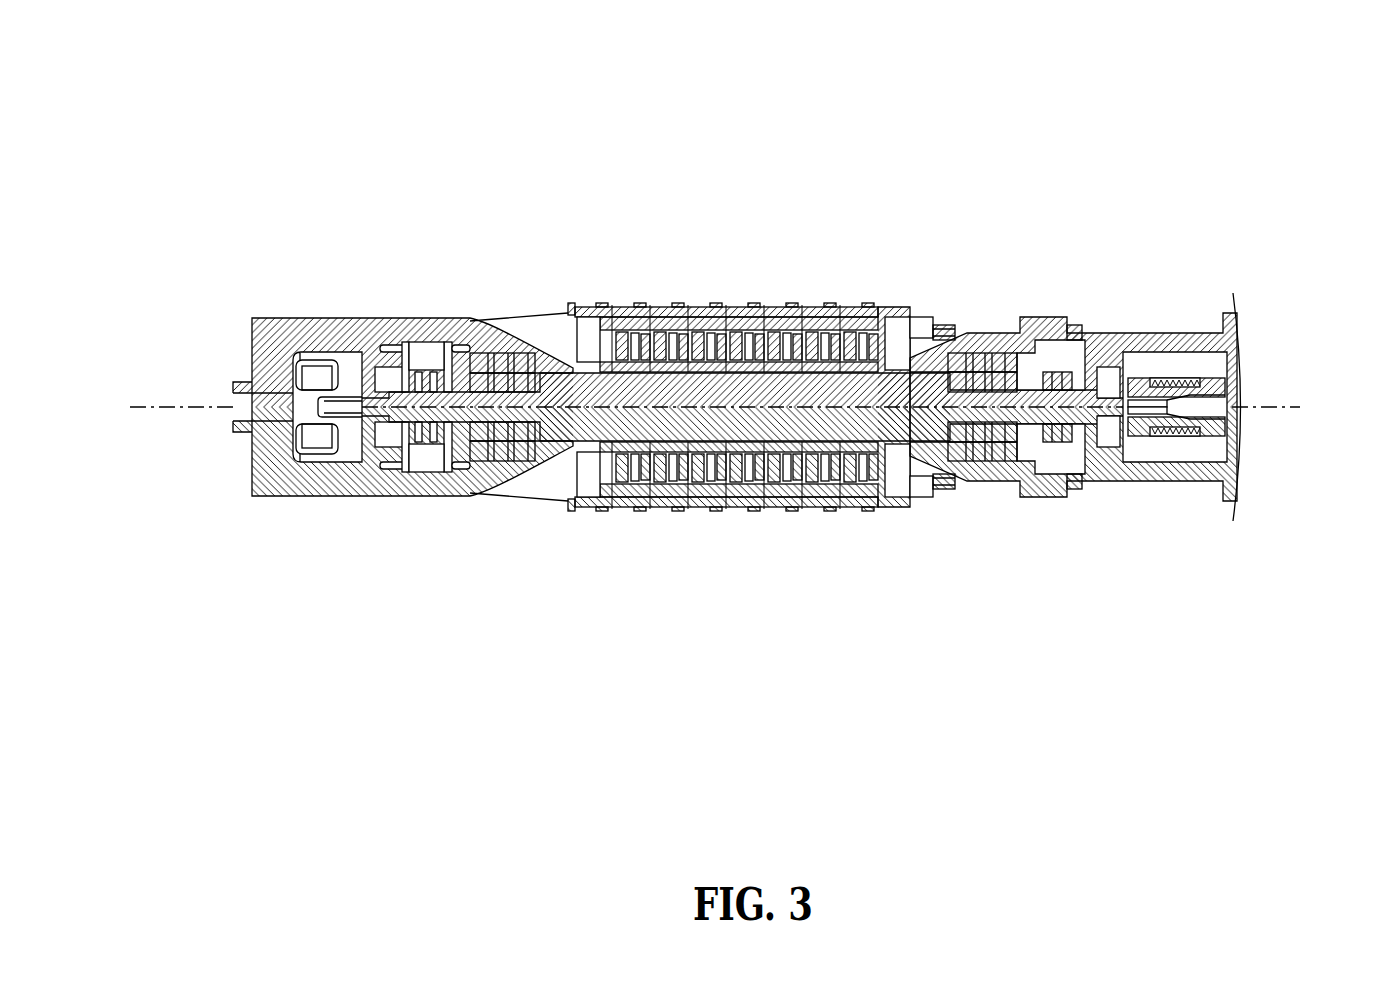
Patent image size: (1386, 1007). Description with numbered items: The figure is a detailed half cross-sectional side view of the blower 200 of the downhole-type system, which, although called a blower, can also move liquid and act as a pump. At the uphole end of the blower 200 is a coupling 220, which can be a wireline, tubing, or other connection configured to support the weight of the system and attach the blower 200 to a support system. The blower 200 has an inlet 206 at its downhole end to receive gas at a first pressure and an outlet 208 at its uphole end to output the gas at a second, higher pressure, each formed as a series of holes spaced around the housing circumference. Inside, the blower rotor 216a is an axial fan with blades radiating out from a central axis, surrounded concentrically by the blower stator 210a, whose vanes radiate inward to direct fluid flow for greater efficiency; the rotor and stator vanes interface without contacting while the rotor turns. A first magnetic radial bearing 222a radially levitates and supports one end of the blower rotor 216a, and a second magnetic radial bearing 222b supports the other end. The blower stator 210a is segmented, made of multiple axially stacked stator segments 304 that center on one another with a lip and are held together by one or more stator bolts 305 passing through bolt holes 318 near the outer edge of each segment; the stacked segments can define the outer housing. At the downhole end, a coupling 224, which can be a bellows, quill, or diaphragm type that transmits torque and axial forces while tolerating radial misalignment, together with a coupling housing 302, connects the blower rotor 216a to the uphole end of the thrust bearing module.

The blower 200 is at (742, 372).
The inlet 206 is at (918, 487).
The outlet 208 is at (553, 488).
The blower stator 210a is at (778, 510).
The blower rotor 216a is at (707, 410).
The coupling 220 is at (231, 413).
The first magnetic radial bearing 222a is at (485, 362).
The second magnetic radial bearing 222b is at (982, 362).
The coupling 224 is at (1175, 447).
The coupling housing 302 is at (1135, 333).
The stator segment 304 is at (716, 520).
The stator bolt 305 is at (750, 310).
The bolt hole 318 is at (575, 305).